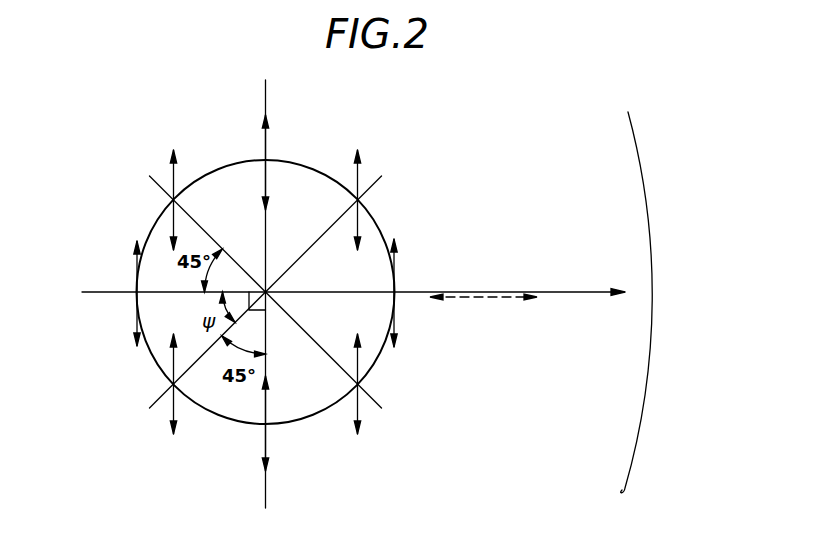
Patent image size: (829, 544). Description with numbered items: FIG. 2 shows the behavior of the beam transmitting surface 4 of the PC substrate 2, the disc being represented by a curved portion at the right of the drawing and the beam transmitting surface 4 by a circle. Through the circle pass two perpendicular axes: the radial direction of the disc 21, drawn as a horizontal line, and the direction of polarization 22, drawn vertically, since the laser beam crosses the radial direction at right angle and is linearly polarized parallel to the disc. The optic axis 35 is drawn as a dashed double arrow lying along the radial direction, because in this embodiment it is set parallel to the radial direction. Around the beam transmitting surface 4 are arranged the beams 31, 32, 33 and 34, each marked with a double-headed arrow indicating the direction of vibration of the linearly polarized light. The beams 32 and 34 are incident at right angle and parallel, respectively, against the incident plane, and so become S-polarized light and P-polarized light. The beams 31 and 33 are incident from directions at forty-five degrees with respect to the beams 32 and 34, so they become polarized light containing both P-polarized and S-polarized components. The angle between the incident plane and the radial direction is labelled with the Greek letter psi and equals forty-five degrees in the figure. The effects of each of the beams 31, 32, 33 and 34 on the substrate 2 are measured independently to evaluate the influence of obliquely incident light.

The PC substrate 2 is at (624, 492).
The beam transmitting surface 4 is at (370, 345).
The radial direction of the disc 21 is at (462, 297).
The direction of polarization 22 is at (266, 490).
The beam 31 is at (179, 176).
The beam 32 is at (137, 317).
The beam 33 is at (173, 412).
The beam 34 is at (265, 449).
The optic axis 35 is at (462, 297).